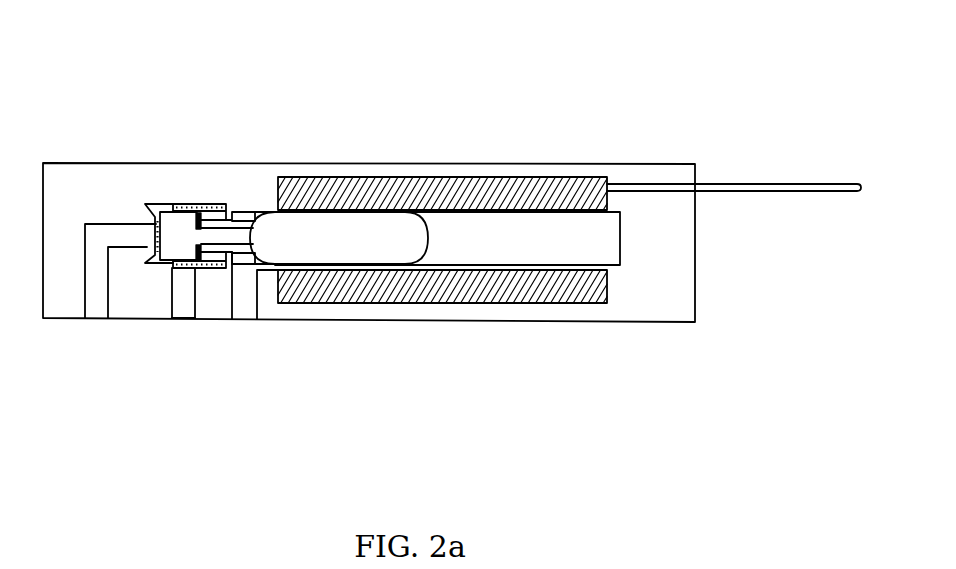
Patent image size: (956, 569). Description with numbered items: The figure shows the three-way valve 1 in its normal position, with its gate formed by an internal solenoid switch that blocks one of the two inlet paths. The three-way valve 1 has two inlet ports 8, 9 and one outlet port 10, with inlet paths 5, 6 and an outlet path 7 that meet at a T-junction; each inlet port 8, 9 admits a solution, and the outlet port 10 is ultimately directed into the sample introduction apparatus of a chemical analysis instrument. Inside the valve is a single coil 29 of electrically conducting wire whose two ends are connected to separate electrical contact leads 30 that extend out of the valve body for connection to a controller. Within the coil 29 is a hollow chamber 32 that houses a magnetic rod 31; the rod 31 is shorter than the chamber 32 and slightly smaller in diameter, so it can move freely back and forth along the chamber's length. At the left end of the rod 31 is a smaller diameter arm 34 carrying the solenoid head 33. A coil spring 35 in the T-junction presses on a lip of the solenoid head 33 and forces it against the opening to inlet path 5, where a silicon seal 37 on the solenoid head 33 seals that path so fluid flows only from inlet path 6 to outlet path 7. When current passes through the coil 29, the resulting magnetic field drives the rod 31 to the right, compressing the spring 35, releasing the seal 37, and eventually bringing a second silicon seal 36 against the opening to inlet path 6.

The 3-way valve 1 is at (427, 156).
The inlet path 5 is at (97, 270).
The inlet path 6 is at (245, 293).
The outlet path 7 is at (181, 294).
The inlet port 8 is at (97, 319).
The inlet port 9 is at (245, 320).
The outlet port 10 is at (182, 319).
The coil 29 is at (553, 187).
The electrical contact leads 30 is at (795, 188).
The magnetic rod 31 is at (383, 238).
The hollow chamber 32 is at (553, 236).
The solenoid head 33 is at (176, 233).
The arm 34 is at (239, 232).
The coil spring 35 is at (213, 205).
The silicon seal 36 is at (195, 226).
The silicon seal 37 is at (153, 240).